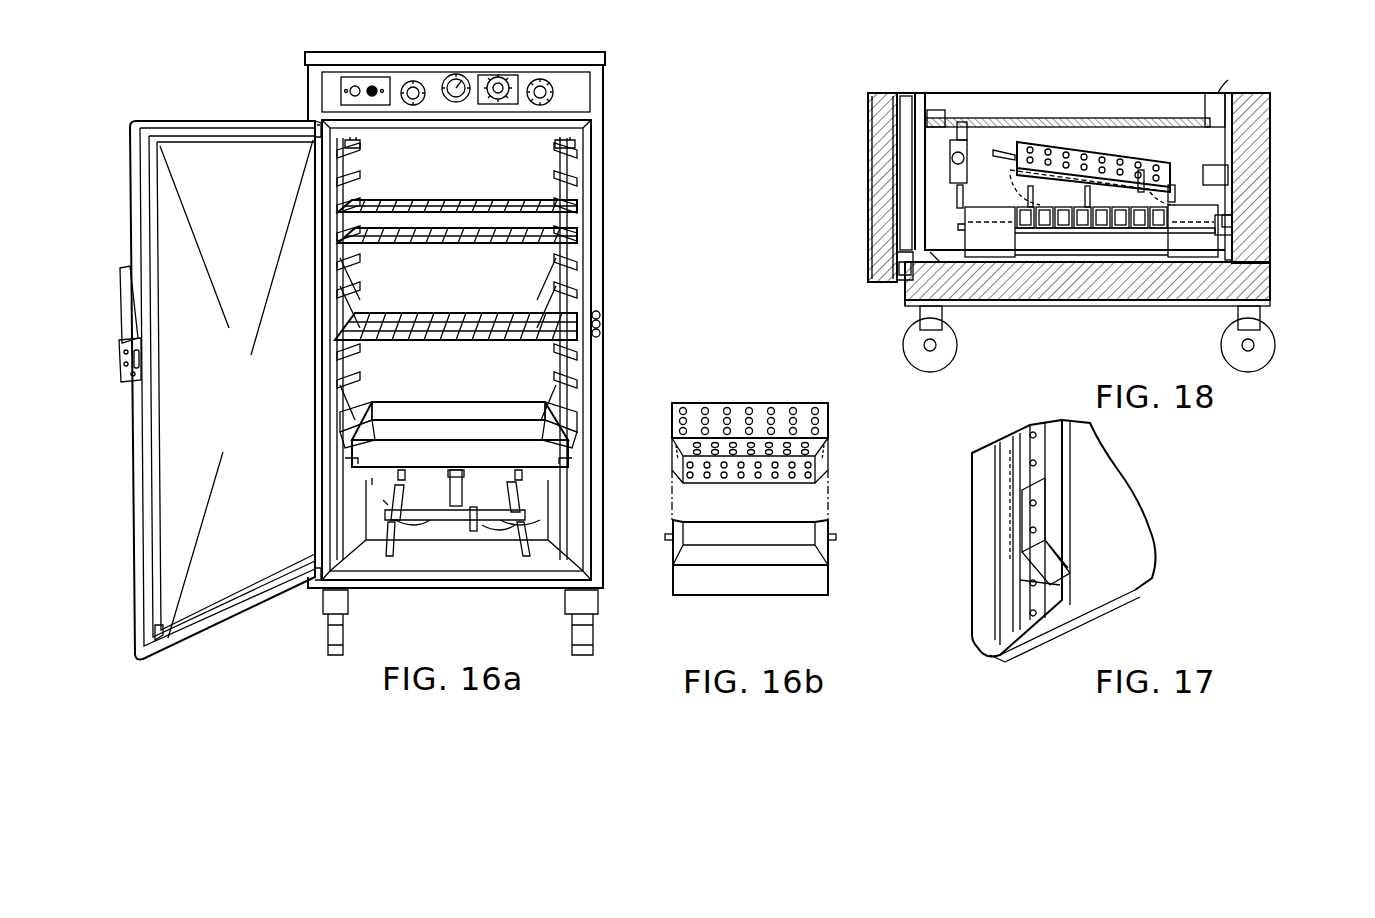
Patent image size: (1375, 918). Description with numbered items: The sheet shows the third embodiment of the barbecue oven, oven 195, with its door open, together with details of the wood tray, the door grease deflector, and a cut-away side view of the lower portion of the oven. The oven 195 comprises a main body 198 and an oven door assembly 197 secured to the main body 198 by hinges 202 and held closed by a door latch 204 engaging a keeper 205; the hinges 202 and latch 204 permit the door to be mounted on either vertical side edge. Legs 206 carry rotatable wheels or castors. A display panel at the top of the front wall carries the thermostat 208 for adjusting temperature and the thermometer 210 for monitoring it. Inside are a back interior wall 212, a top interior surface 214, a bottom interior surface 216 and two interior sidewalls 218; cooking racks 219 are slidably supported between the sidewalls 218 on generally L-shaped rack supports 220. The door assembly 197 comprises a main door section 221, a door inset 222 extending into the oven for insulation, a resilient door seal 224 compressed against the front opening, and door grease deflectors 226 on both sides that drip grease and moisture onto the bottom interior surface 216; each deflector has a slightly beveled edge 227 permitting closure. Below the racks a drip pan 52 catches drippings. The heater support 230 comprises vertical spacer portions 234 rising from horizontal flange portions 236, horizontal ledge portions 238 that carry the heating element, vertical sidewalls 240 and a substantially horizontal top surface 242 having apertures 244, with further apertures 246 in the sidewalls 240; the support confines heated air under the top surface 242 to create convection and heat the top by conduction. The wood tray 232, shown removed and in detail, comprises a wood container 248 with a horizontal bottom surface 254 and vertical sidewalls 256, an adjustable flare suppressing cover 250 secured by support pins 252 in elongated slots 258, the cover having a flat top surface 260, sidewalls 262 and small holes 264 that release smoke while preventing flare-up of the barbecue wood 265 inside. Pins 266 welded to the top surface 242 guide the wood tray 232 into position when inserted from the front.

In FIG. 16A, the oven 195 is at (453, 357).
In FIG. 18, the oven 195 is at (1075, 205).
In FIG. 16A, the oven door assembly 197 is at (196, 367).
In FIG. 17, the oven door assembly 197 is at (1055, 559).
In FIG. 18, the oven door assembly 197 is at (847, 207).
In FIG. 16A, the main body 198 is at (604, 127).
In FIG. 18, the main body 198 is at (992, 312).
In FIG. 16A, the hinges 202 is at (314, 123).
In FIG. 16A, the door latch 204 is at (120, 361).
In FIG. 16A, the keeper 205 is at (602, 318).
In FIG. 16A, the legs 206 is at (328, 602).
In FIG. 18, the legs 206 is at (920, 315).
In FIG. 16A, the thermostat 208 is at (493, 100).
In FIG. 16A, the thermometer 210 is at (452, 102).
In FIG. 16A, the back interior wall 212 is at (448, 407).
In FIG. 18, the back interior wall 212 is at (1218, 93).
In FIG. 16A, the top interior surface 214 is at (572, 131).
In FIG. 16A, the bottom interior surface 216 is at (440, 570).
In FIG. 18, the bottom interior surface 216 is at (1045, 257).
In FIG. 16A, the interior sidewalls 218 is at (330, 493).
In FIG. 18, the interior sidewalls 218 is at (985, 155).
In FIG. 16A, the cooking racks 219 is at (428, 312).
In FIG. 16A, the rack supports 220 is at (575, 203).
In FIG. 16A, the main door section 221 is at (133, 143).
In FIG. 17, the main door section 221 is at (985, 521).
In FIG. 18, the main door section 221 is at (866, 173).
In FIG. 16A, the door inset 222 is at (210, 152).
In FIG. 17, the door inset 222 is at (1125, 542).
In FIG. 16A, the door seal 224 is at (146, 234).
In FIG. 17, the door seal 224 is at (1005, 440).
In FIG. 18, the door seal 224 is at (900, 282).
In FIG. 16A, the door grease deflectors 226 is at (153, 629).
In FIG. 17, the door grease deflectors 226 is at (1046, 555).
In FIG. 18, the door grease deflectors 226 is at (895, 257).
In FIG. 17, the beveled edge 227 is at (1030, 578).
In FIG. 16A, the heater support 230 is at (525, 500).
In FIG. 16B, the wood tray 232 is at (758, 422).
In FIG. 18, the wood tray 232 is at (1121, 136).
In FIG. 16A, the vertical spacer portions 234 is at (400, 520).
In FIG. 18, the vertical spacer portions 234 is at (975, 250).
In FIG. 16A, the horizontal flange portions 236 is at (385, 560).
In FIG. 16A, the horizontal ledge portions 238 is at (527, 530).
In FIG. 18, the horizontal ledge portions 238 is at (1112, 233).
In FIG. 16A, the vertical sidewalls 240 is at (385, 528).
In FIG. 18, the vertical sidewalls 240 is at (965, 230).
In FIG. 16A, the top surface 242 is at (516, 470).
In FIG. 18, the top surface 242 is at (965, 210).
In FIG. 16A, the apertures 244 is at (398, 470).
In FIG. 18, the apertures 246 is at (1062, 230).
In FIG. 16B, the wood container 248 is at (758, 577).
In FIG. 18, the wood container 248 is at (950, 173).
In FIG. 16B, the adjustable flare suppressing cover 250 is at (758, 431).
In FIG. 18, the adjustable flare suppressing cover 250 is at (1093, 115).
In FIG. 16B, the flare suppressing cover support pins 252 is at (668, 540).
In FIG. 18, the flare suppressing cover support pins 252 is at (1172, 186).
In FIG. 16B, the horizontal bottom surface 254 is at (720, 547).
In FIG. 16B, the vertical sidewalls 256 is at (688, 532).
In FIG. 18, the vertical sidewalls 256 is at (1030, 185).
In FIG. 18, the elongated slots 258 is at (1142, 170).
In FIG. 16B, the flat top surface 260 is at (727, 446).
In FIG. 16B, the sidewalls 262 is at (758, 434).
In FIG. 18, the sidewalls 262 is at (1093, 109).
In FIG. 16B, the small holes 264 is at (683, 412).
In FIG. 18, the small holes 264 is at (1120, 163).
In FIG. 18, the barbecue wood 265 is at (1018, 210).
In FIG. 16A, the pins 266 is at (510, 482).
In FIG. 18, the pins 266 is at (1105, 262).
In FIG. 16A, the pan 52 is at (372, 472).